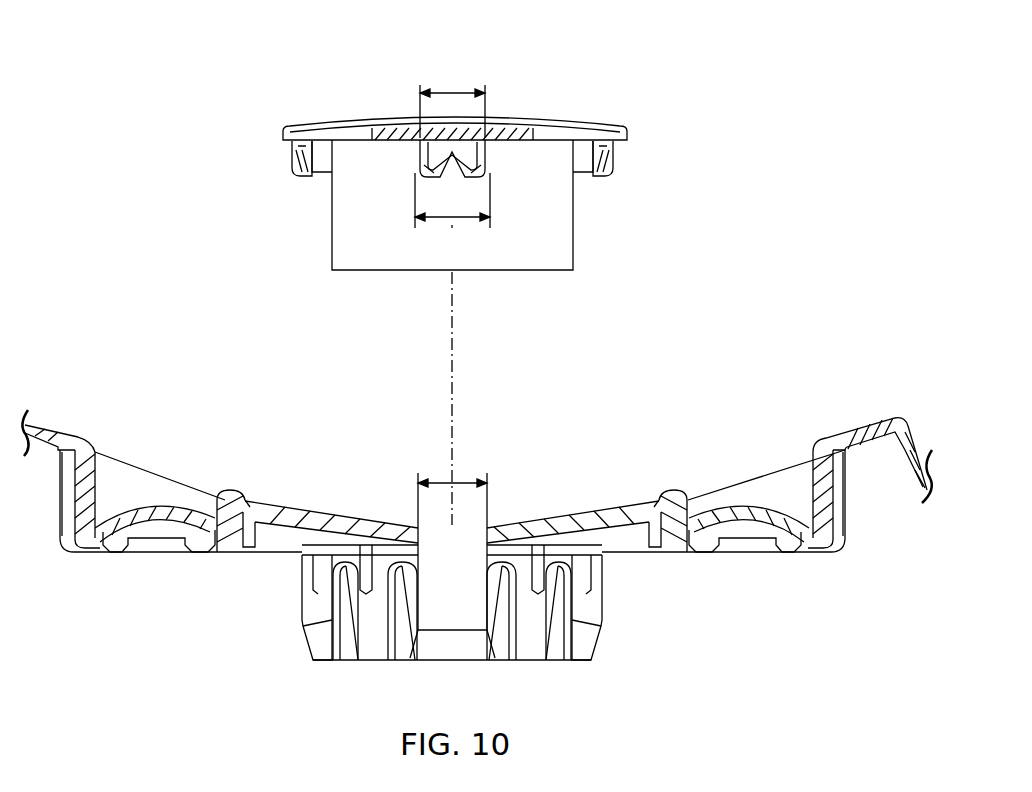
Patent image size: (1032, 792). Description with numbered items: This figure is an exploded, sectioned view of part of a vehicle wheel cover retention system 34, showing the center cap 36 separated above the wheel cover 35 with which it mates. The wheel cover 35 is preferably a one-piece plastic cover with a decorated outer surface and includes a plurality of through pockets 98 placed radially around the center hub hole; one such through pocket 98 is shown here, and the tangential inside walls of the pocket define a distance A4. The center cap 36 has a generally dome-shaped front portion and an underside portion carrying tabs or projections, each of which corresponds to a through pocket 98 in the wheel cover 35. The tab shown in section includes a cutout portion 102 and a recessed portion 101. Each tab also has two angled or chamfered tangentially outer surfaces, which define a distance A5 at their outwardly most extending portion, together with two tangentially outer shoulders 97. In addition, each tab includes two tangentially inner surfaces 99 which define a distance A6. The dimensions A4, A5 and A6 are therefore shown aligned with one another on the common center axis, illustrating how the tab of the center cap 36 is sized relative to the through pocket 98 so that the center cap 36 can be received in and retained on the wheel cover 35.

The vehicle wheel cover retention system 34 is at (638, 382).
The wheel cover 35 is at (838, 425).
The center cap 36 is at (553, 112).
The tangentially outer shoulders 97 is at (414, 162).
The through pocket 98 is at (422, 555).
The tangentially inner surfaces 99 is at (488, 154).
The recessed portion 101 is at (452, 200).
The cutout portion 102 is at (432, 158).
The distance defined by the tangential inside walls of the pocket A4 is at (460, 483).
The distance defined by the angled or chamfered tangentially outer surfaces A5 is at (458, 218).
The distance defined by the tangentially inner surfaces A6 is at (460, 92).